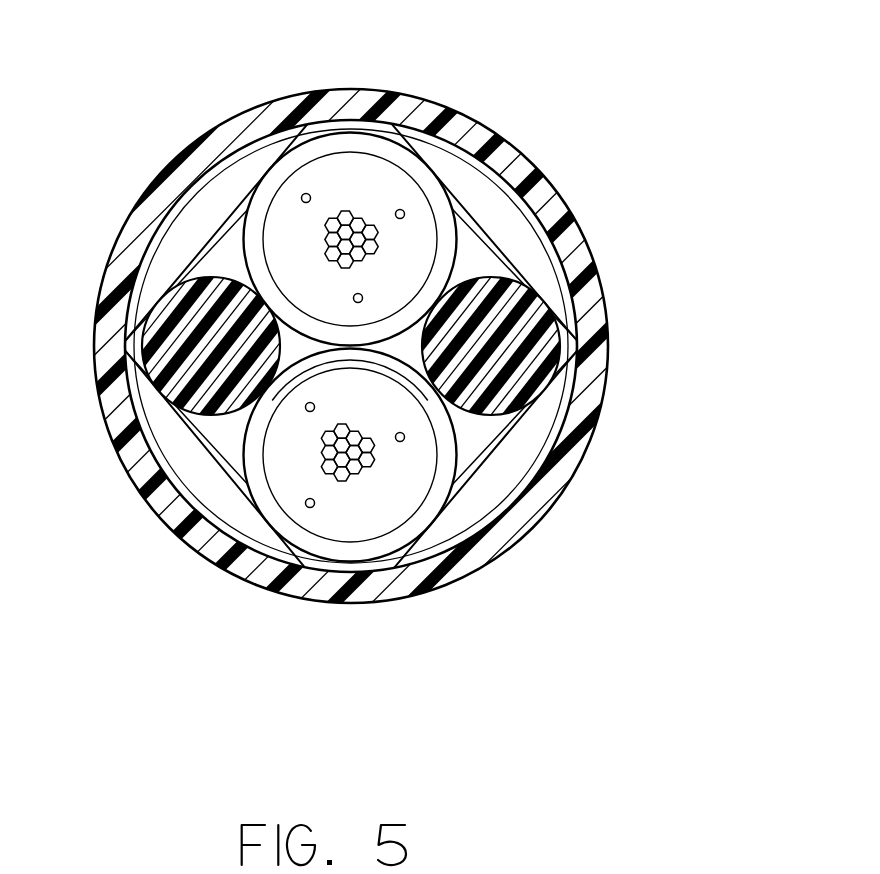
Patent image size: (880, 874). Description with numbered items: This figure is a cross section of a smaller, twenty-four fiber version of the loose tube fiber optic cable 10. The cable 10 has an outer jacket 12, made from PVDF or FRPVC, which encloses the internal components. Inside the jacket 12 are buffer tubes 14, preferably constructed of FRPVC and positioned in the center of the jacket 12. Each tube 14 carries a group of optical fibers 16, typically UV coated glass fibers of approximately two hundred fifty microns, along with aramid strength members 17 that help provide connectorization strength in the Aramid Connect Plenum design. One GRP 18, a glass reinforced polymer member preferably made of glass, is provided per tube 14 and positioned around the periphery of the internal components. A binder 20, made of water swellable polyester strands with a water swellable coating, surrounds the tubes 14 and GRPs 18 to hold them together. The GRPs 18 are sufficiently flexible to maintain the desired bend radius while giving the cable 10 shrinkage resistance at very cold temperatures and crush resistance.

The fiber optic cable 10 is at (206, 72).
The outer jacket 12 is at (461, 127).
The buffer tubes 14 is at (445, 443).
The fibers 16 is at (357, 467).
The aramid strength members 17 is at (310, 503).
The GRP 18 is at (525, 318).
The binder 20 is at (518, 425).